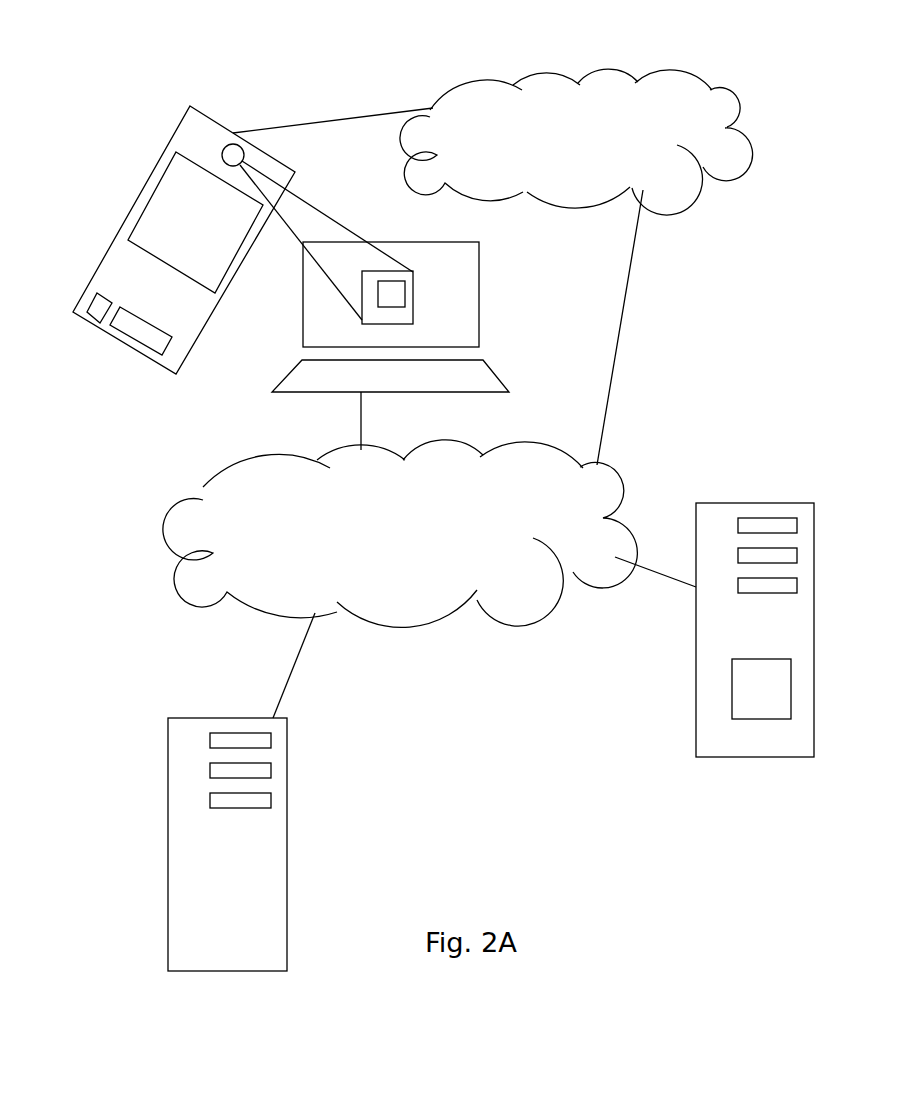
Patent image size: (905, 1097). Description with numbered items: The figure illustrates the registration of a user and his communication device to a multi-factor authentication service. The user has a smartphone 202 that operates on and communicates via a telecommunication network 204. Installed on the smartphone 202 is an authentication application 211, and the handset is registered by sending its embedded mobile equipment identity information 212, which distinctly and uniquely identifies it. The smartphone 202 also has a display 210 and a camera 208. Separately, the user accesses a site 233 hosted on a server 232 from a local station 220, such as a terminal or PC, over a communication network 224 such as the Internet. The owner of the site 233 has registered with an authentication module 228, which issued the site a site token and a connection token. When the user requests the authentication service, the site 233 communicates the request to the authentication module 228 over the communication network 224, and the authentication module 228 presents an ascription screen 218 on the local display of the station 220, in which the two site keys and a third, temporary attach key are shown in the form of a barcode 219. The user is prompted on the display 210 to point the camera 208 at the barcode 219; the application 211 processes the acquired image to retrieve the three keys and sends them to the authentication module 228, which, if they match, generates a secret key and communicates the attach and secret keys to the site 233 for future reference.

The smartphone 202 is at (190, 106).
The telecommunication network 204 is at (500, 83).
The camera 208 is at (180, 125).
The display 210 is at (152, 197).
The authentication application 211 is at (120, 328).
The mobile equipment identity information 212 is at (87, 307).
The ascription screen 218 is at (413, 302).
The barcode 219 is at (405, 307).
The local station 220 is at (480, 300).
The communication network 224 is at (213, 487).
The authentication module 228 is at (288, 822).
The server 232 is at (696, 675).
The site 233 is at (753, 720).